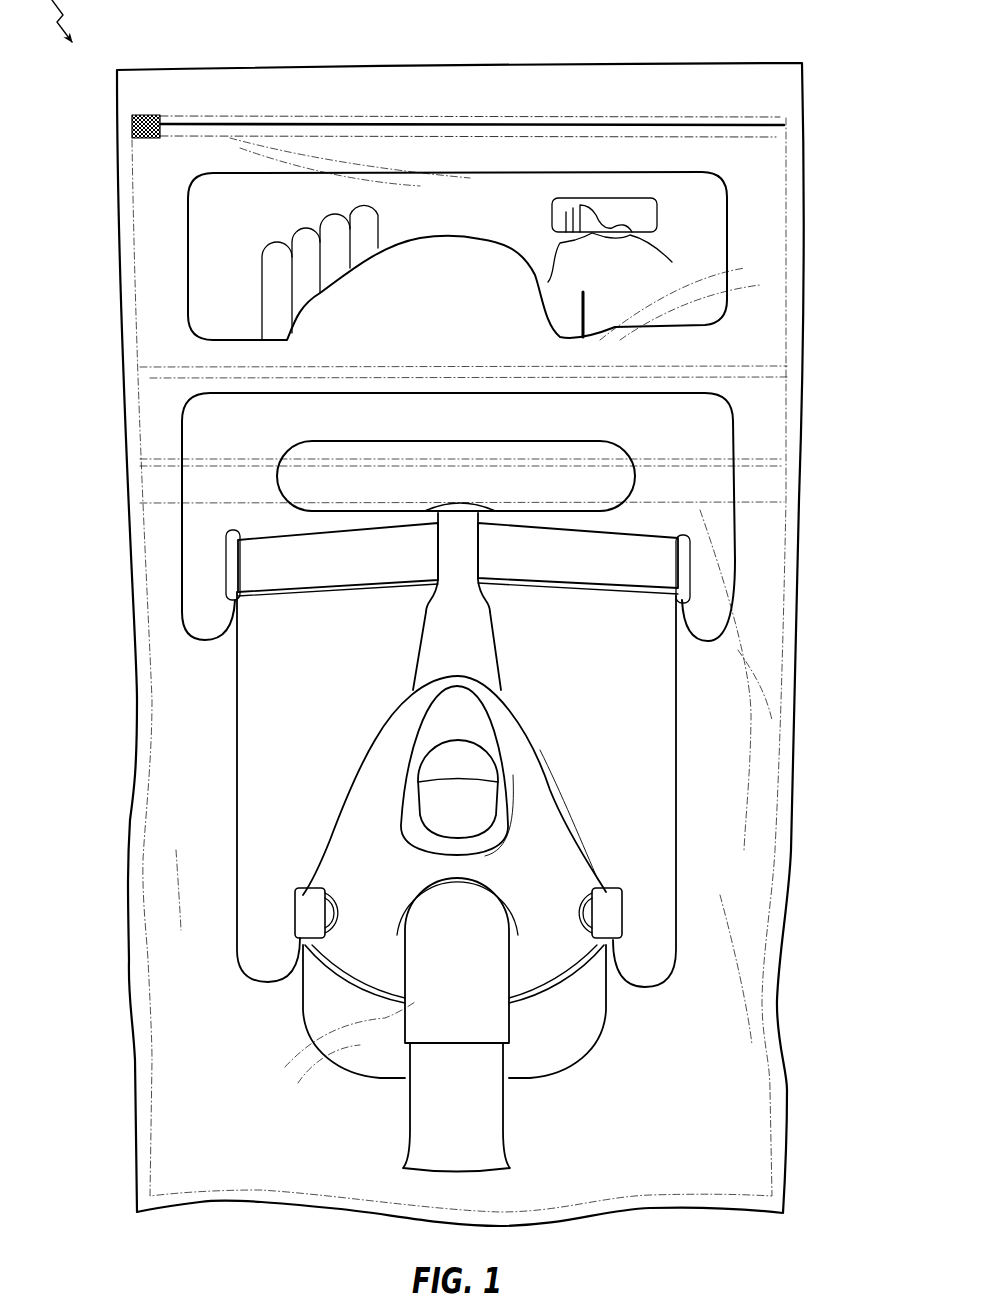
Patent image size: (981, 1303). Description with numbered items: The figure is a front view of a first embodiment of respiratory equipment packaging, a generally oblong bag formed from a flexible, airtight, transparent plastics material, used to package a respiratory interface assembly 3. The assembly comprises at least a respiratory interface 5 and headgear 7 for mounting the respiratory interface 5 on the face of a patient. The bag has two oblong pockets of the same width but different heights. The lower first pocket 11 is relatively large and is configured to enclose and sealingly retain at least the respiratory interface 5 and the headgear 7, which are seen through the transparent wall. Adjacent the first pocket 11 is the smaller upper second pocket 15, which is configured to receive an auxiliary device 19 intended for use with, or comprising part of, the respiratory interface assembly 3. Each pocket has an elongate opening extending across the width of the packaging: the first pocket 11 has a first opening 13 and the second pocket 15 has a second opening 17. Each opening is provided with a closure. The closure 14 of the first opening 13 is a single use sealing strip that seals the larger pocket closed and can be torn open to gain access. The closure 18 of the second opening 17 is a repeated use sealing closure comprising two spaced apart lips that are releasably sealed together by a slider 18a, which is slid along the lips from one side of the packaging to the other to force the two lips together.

The respiratory interface assembly 3 is at (470, 842).
The respiratory interface 5 is at (370, 808).
The headgear 7 is at (335, 570).
The first pocket 11 is at (752, 902).
The first opening 13 is at (767, 471).
The closure 14 is at (751, 493).
The second pocket 15 is at (769, 242).
The second opening 17 is at (764, 146).
The closure 18 is at (760, 120).
The slider 18a is at (152, 113).
The auxiliary device 19 is at (462, 223).